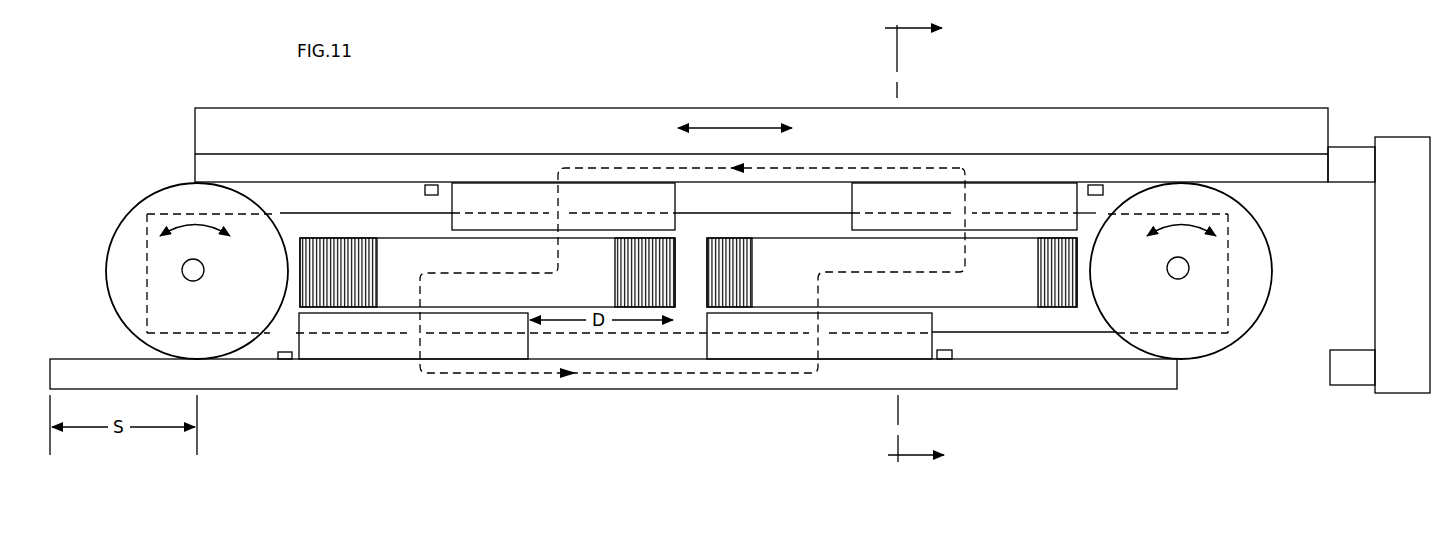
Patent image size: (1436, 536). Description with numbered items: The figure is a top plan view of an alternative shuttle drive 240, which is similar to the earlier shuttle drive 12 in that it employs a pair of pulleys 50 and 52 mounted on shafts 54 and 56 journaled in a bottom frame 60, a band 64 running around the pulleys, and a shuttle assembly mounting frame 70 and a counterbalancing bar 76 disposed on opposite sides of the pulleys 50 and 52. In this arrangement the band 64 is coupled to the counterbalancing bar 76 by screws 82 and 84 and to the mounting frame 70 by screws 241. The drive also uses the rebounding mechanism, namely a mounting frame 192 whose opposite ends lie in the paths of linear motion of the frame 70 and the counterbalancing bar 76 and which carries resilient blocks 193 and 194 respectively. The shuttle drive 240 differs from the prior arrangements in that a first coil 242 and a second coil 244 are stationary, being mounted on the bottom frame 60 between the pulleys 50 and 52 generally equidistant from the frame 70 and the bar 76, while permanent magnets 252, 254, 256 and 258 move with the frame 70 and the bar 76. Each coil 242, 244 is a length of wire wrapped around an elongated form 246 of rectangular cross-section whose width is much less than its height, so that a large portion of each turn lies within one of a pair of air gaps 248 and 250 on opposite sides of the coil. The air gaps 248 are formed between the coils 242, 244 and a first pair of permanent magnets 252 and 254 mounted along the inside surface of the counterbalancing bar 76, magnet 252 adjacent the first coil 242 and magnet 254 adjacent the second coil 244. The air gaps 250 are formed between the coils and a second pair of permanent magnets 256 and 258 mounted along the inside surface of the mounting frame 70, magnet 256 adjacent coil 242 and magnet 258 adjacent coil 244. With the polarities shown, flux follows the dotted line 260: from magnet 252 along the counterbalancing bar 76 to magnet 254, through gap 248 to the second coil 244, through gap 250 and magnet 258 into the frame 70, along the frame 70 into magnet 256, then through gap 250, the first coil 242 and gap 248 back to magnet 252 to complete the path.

The shuttle drive 12 is at (928, 244).
The pulley 50 is at (1258, 306).
The pulley 52 is at (115, 294).
The shaft 54 is at (1178, 271).
The shaft 56 is at (200, 273).
The bottom frame 60 is at (993, 322).
The band 64 is at (738, 184).
The shuttle assembly mounting frame 70 is at (1128, 123).
The counterbalancing bar 76 is at (263, 374).
The screw 82 is at (291, 352).
The screw 84 is at (962, 354).
The mounting frame 192 is at (1388, 394).
The resilient block 193 is at (1343, 163).
The resilient block 194 is at (1352, 373).
The shuttle drive 240 is at (471, 397).
The screws 241 is at (425, 190).
The first coil 242 is at (333, 251).
The second coil 244 is at (735, 219).
The elongated form 246 is at (406, 251).
The air gap 248 is at (502, 311).
The air gap 250 is at (487, 233).
The permanent magnet 252 is at (348, 348).
The permanent magnet 254 is at (845, 348).
The permanent magnet 256 is at (517, 203).
The permanent magnet 258 is at (1003, 197).
The dotted line 260 is at (628, 375).